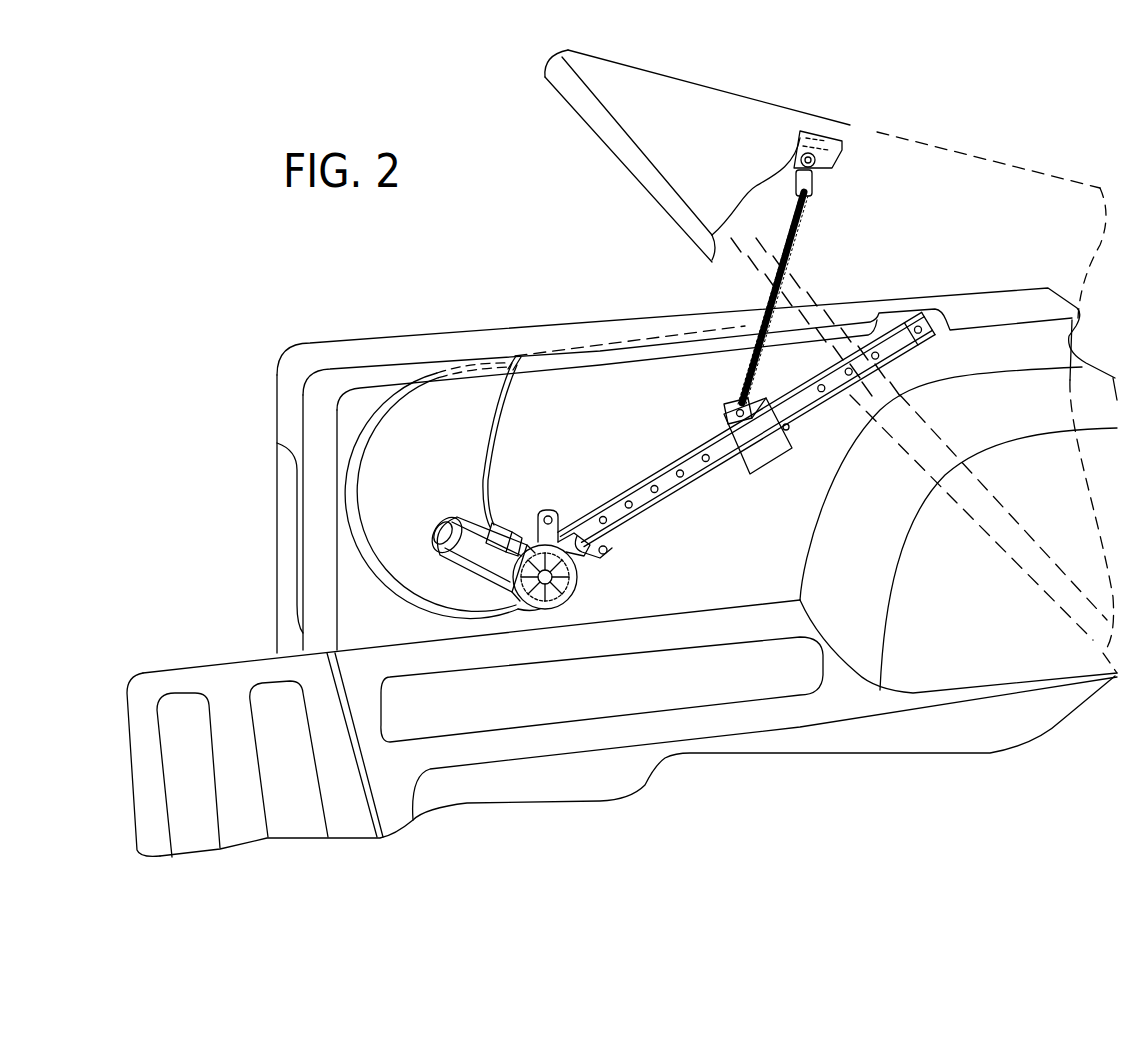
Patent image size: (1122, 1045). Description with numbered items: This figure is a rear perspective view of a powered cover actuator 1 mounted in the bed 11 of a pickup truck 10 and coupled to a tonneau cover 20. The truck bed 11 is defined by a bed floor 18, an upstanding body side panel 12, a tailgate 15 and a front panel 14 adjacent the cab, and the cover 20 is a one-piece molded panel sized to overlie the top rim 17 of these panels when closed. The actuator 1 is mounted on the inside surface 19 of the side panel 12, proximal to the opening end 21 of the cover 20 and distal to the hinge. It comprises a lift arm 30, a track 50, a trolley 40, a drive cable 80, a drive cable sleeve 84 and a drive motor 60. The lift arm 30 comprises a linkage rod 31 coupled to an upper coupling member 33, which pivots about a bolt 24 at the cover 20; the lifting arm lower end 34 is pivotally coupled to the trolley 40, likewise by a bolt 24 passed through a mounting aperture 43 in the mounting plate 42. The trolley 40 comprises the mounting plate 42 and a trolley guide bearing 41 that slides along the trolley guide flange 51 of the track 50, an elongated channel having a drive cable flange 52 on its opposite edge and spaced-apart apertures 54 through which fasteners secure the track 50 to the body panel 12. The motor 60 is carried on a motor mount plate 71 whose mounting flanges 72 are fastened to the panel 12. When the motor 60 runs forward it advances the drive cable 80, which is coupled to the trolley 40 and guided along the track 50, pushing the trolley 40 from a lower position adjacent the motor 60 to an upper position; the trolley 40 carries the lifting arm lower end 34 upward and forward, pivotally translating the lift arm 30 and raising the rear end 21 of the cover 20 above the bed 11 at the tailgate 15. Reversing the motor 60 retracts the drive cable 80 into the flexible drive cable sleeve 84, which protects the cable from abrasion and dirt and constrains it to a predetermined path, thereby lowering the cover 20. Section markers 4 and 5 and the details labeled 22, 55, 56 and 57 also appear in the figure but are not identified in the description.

The powered cover actuator 1 is at (663, 620).
The section line 4 is at (695, 418).
The section line 5 is at (478, 506).
The pickup truck 10 is at (270, 307).
The truck bed 11 is at (262, 522).
The body side panel 12 is at (347, 340).
The front panel 14 is at (588, 571).
The tailgate 15 is at (198, 675).
The top rim 17 is at (470, 338).
The bed floor 18 is at (500, 712).
The inside surface 19 is at (538, 417).
The tonneau cover 20 is at (825, 174).
The opening end 21 is at (595, 72).
The glass clamp 22 is at (800, 143).
The bolt 24 is at (820, 170).
The lift arm 30 is at (750, 255).
The linkage rod 31 is at (790, 258).
The upper coupling member 33 is at (812, 188).
The lifting arm lower end 34 is at (712, 418).
The trolley 40 is at (753, 454).
The trolley guide bearing 41 is at (764, 410).
The mounting plate 42 is at (748, 490).
The mounting apertures 43 is at (722, 425).
The track 50 is at (794, 444).
The trolley guide flange 51 is at (623, 500).
The drive cable flange 52 is at (648, 504).
The spaced-apart apertures 54 is at (688, 487).
The cable end fitting 55 is at (510, 512).
The rail end 56 is at (922, 357).
The rail bracket 57 is at (598, 540).
The drive motor 60 is at (447, 557).
The motor mount plate 71 is at (557, 538).
The mounting flanges 72 is at (548, 512).
The drive cable 80 is at (704, 449).
The drive cable sleeve 84 is at (368, 435).